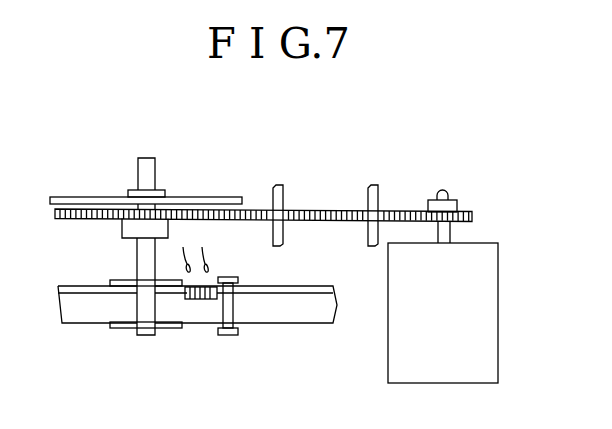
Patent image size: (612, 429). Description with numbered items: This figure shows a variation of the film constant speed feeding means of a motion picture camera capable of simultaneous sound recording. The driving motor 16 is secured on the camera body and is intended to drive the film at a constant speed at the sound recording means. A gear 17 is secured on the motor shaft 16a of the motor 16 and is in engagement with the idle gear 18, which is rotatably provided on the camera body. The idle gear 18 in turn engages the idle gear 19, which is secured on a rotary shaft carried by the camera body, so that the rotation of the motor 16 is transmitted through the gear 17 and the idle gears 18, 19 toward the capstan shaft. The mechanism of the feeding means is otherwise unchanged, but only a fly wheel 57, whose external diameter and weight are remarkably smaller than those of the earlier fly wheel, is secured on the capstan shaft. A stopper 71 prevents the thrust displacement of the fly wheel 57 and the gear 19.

The driving motor 16 is at (430, 212).
The motor shaft 16a is at (446, 192).
The gear 17 is at (348, 210).
The idle gear 18 is at (303, 210).
The idle gear 19 is at (222, 210).
The fly wheel 57 is at (213, 198).
The stopper 71 is at (160, 192).